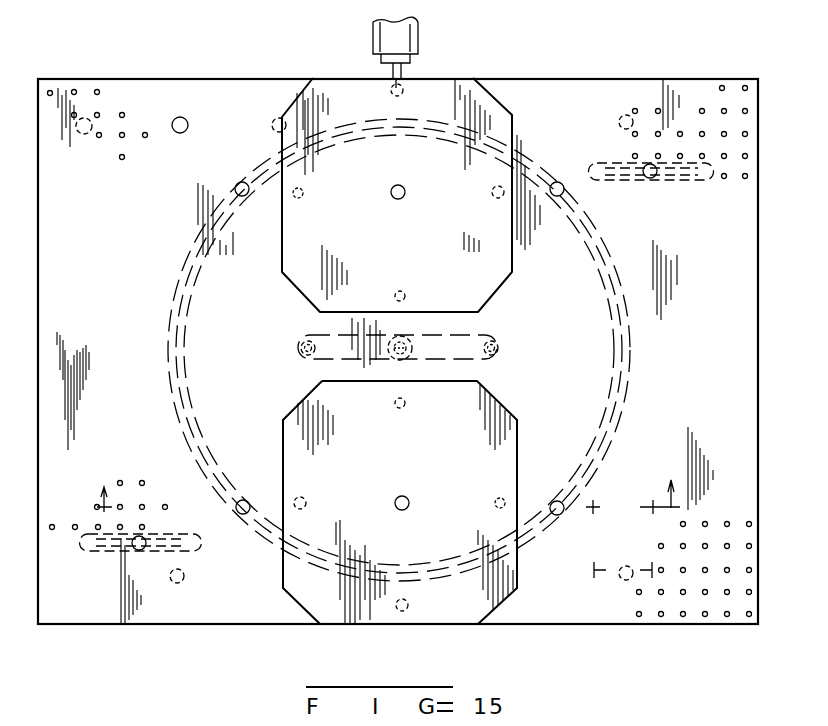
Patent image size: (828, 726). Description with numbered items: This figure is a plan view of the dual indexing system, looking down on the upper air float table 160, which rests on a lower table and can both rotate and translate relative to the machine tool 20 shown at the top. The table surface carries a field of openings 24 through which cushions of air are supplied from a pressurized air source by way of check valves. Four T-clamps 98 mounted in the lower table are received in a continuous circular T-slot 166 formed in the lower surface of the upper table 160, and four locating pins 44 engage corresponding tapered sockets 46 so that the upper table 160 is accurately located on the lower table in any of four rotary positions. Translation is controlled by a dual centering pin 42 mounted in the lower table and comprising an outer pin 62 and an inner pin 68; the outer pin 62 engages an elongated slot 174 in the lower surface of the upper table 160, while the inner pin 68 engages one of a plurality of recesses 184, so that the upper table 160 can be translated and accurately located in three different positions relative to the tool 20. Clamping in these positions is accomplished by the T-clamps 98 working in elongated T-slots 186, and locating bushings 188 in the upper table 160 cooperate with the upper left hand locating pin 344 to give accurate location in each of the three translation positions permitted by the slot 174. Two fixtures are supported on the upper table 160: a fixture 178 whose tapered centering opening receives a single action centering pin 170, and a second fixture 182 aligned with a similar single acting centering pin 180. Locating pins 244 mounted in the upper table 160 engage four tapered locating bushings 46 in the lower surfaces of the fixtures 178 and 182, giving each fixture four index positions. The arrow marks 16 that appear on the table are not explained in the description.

The alignment arrow / reference mark 16 is at (386, 516).
The machine tool 20 is at (372, 41).
The openings 24 is at (724, 108).
The dual centering pin 42 is at (410, 330).
The locating pins 44 is at (626, 114).
The tapered sockets 46 is at (404, 88).
The outer pin 62 is at (394, 338).
The inner pin 68 is at (396, 360).
The T-clamps 98 is at (236, 185).
The upper table 160 is at (238, 602).
The continuous circular T-slot 166 is at (376, 350).
The single action centering pin 170 is at (403, 495).
The elongated slot 174 is at (458, 332).
The fixture 178 is at (518, 448).
The single acting centering pin 180 is at (399, 184).
The second fixture 182 is at (510, 112).
The recesses 184 is at (308, 340).
The elongated T-slots 186 is at (620, 181).
The locating bushings 188 is at (86, 117).
The locating pins 244 is at (305, 190).
The upper left hand locating pin 344 is at (180, 116).